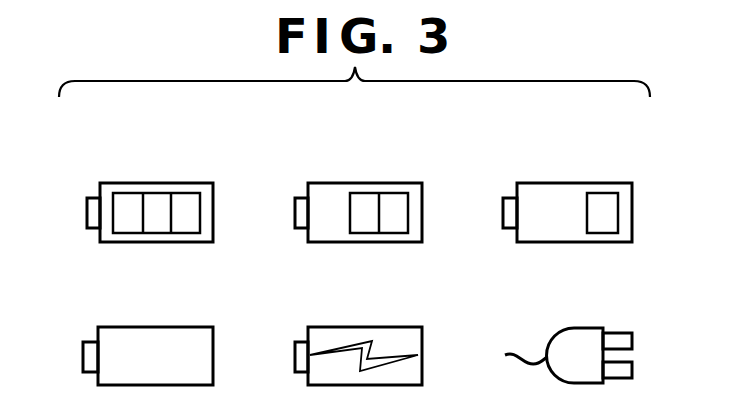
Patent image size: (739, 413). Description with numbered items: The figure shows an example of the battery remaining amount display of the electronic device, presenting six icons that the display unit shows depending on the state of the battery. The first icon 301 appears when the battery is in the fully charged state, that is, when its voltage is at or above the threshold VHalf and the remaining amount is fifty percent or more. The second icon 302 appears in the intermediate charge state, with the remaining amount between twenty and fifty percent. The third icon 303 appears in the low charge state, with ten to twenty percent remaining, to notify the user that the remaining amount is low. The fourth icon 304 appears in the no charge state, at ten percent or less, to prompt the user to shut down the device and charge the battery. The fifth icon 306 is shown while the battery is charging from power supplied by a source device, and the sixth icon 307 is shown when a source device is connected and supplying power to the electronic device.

The first icon 301 is at (152, 183).
The second icon 302 is at (357, 183).
The third icon 303 is at (567, 183).
The fourth icon 304 is at (152, 327).
The fifth icon 306 is at (357, 327).
The sixth icon 307 is at (567, 328).